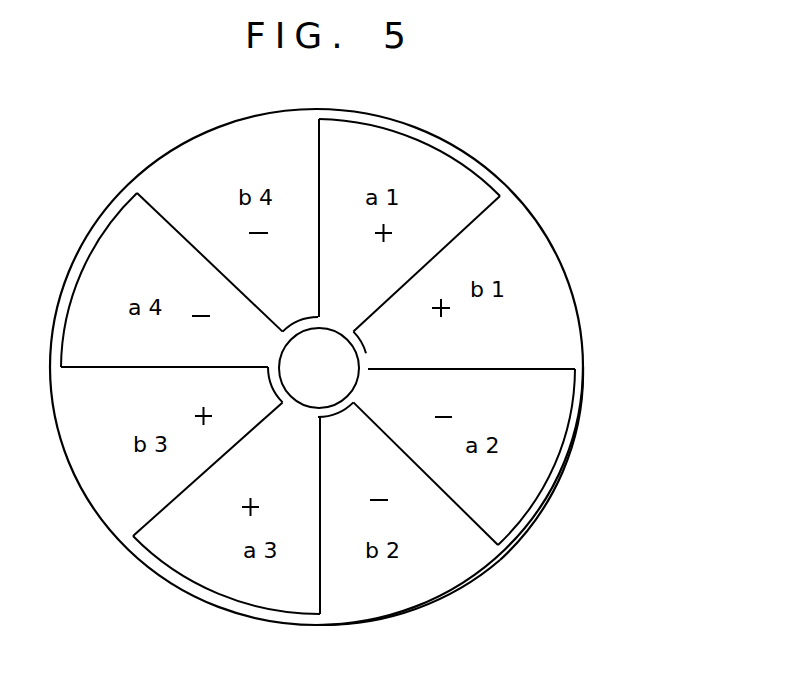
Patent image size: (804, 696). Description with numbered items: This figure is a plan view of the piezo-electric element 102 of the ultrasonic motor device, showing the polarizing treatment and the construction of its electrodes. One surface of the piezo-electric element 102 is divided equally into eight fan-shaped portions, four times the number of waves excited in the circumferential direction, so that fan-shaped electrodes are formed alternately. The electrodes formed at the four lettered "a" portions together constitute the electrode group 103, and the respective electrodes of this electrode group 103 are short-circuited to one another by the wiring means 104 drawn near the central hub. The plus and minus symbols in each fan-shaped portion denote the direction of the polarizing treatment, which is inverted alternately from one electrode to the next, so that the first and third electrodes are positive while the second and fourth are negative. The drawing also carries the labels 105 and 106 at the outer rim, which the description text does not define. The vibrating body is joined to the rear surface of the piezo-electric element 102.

The piezo-electric element 102 is at (563, 270).
The electrode group 103 is at (398, 160).
The wiring means 104 is at (368, 358).
The sector region 105 is at (445, 578).
The outer rim ring 106 is at (545, 498).